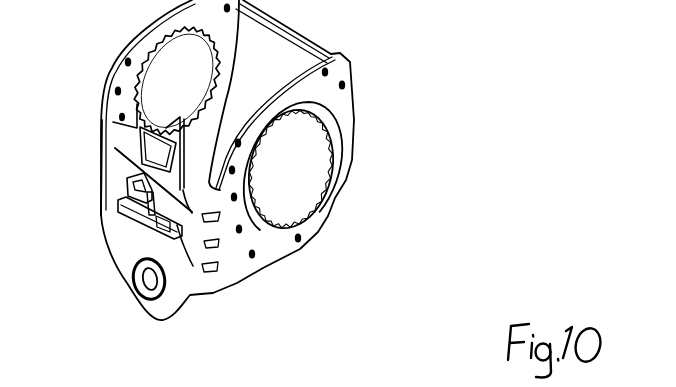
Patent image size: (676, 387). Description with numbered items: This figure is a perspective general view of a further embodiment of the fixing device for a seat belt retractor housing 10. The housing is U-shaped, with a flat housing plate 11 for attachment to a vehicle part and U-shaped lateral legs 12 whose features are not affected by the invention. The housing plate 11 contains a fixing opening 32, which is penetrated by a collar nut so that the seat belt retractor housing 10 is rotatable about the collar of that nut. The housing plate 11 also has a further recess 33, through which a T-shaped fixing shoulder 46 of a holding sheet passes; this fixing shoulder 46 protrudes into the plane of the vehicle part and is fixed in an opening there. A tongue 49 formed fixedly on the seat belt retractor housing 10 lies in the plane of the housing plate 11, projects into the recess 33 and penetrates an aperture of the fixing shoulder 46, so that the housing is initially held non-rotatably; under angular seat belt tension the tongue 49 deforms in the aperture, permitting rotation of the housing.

The seat belt retractor housing 10 is at (349, 206).
The housing plate 11 is at (123, 243).
The U-shaped lateral legs 12 is at (339, 126).
The fixing opening 32 is at (140, 284).
The further recess 33 is at (125, 181).
The T-shaped fixing shoulder 46 is at (125, 222).
The tongue 49 is at (180, 223).